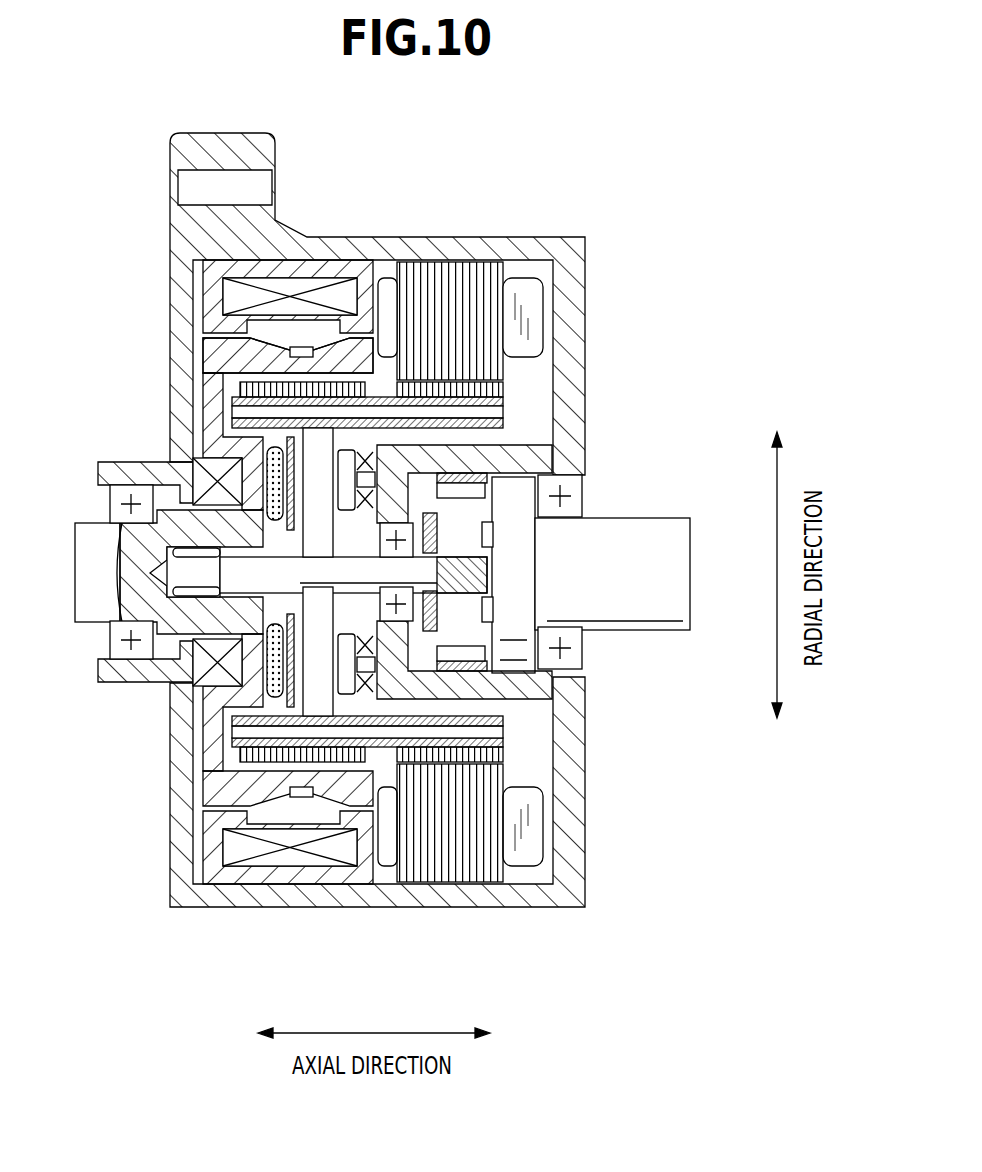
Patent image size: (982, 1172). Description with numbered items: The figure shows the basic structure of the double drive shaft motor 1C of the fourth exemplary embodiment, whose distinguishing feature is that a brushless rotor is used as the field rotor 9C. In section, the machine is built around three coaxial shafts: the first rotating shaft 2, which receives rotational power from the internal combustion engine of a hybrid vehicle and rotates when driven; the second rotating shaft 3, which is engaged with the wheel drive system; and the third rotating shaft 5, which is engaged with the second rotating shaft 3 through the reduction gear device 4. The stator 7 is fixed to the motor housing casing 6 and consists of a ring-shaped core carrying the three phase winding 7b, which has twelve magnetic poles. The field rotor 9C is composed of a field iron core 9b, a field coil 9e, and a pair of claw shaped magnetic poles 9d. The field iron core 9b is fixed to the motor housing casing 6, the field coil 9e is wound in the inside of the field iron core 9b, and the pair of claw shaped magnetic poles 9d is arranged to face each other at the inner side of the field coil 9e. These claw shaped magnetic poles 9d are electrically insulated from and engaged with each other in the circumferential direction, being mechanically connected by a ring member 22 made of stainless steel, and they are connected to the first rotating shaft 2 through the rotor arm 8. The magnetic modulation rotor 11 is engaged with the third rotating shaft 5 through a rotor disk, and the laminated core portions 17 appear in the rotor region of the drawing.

The double drive shaft motor 1C is at (527, 140).
The first rotating shaft 2 is at (87, 592).
The second rotating shaft 3 is at (662, 622).
The reduction gear device 4 is at (503, 498).
The third rotating shaft 5 is at (240, 603).
The motor housing casing 6 is at (180, 232).
The stator 7 is at (512, 274).
The three phase winding 7b is at (527, 318).
The rotor arm 8 is at (213, 410).
The field iron core 9b is at (213, 297).
The field rotor 9C is at (285, 260).
The claw shaped magnetic poles 9d is at (250, 358).
The field coil 9e is at (295, 287).
The magnetic modulation rotor 11 is at (507, 395).
The rotor core laminations 17 is at (277, 757).
The ring member 22 is at (302, 350).